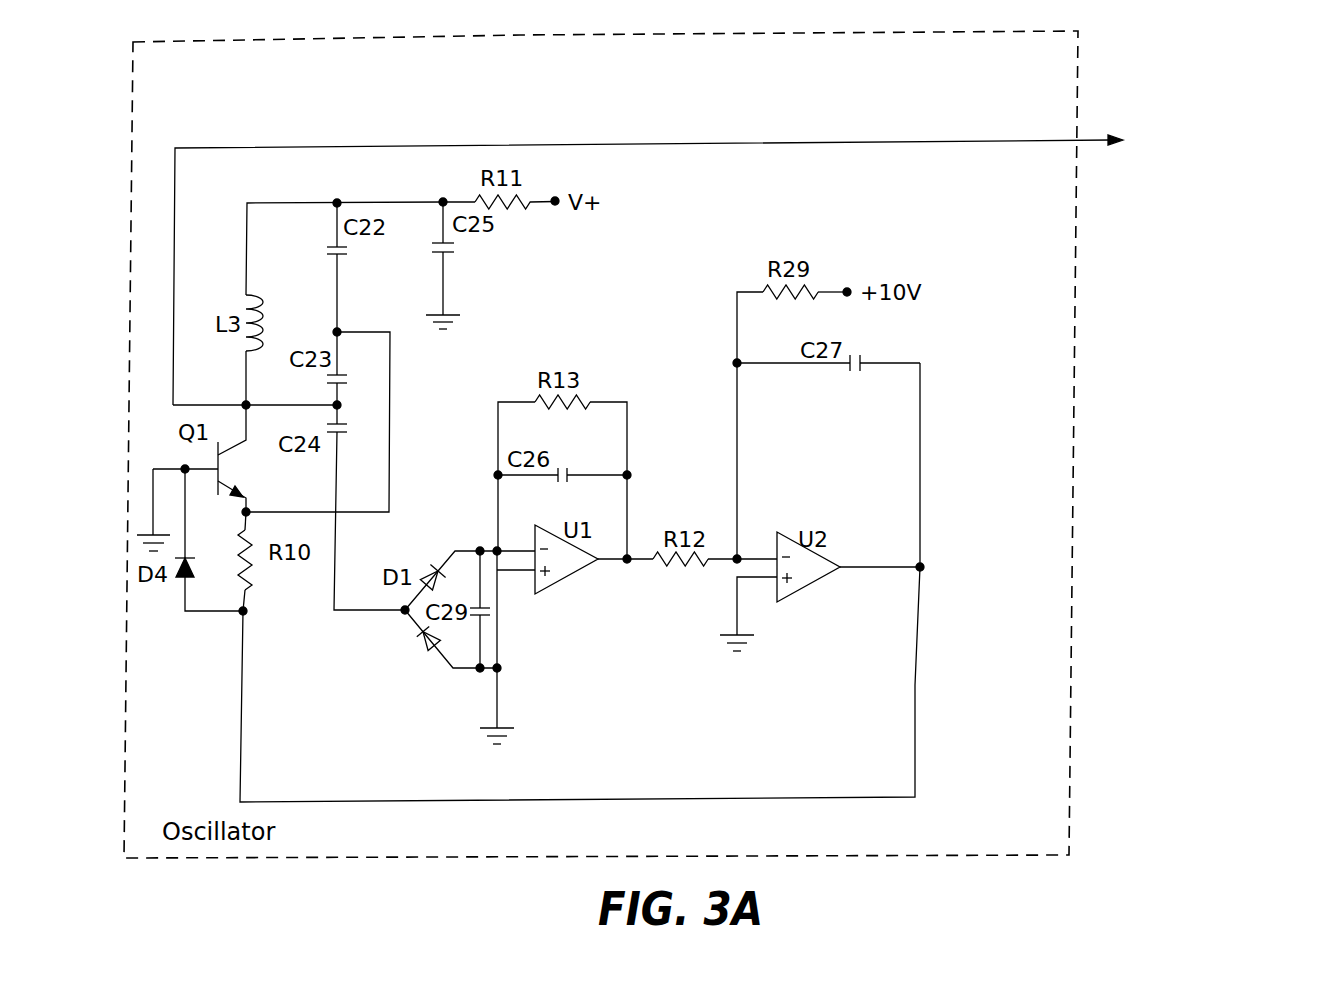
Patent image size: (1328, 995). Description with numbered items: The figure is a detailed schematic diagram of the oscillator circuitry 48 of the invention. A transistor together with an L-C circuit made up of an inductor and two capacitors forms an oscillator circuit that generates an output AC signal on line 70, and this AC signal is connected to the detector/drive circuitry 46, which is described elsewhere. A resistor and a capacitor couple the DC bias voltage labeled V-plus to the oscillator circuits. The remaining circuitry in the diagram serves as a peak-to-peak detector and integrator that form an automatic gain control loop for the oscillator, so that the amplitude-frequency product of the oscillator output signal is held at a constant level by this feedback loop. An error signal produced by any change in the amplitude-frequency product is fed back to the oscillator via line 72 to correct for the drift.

The oscillator circuitry 48 is at (519, 832).
The line 70 is at (287, 148).
The line 72 is at (916, 686).
The detector/drive circuitry 46 is at (1232, 174).